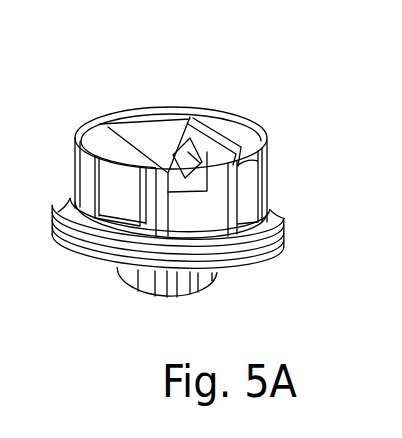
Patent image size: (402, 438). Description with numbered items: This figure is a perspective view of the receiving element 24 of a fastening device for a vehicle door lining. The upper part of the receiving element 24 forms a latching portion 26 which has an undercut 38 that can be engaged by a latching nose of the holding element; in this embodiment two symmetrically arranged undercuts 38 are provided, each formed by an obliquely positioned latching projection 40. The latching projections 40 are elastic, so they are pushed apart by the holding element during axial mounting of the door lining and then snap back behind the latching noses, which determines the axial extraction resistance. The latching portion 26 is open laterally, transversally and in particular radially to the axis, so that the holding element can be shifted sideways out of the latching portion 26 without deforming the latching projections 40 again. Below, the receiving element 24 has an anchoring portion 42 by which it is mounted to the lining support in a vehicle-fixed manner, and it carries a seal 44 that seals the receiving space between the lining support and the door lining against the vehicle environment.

The receiving element 24 is at (109, 98).
The latching portion 26 is at (196, 220).
The undercut 38 is at (192, 116).
The latching projection 40 is at (192, 116).
The anchoring portion 42 is at (146, 308).
The seal 44 is at (279, 222).